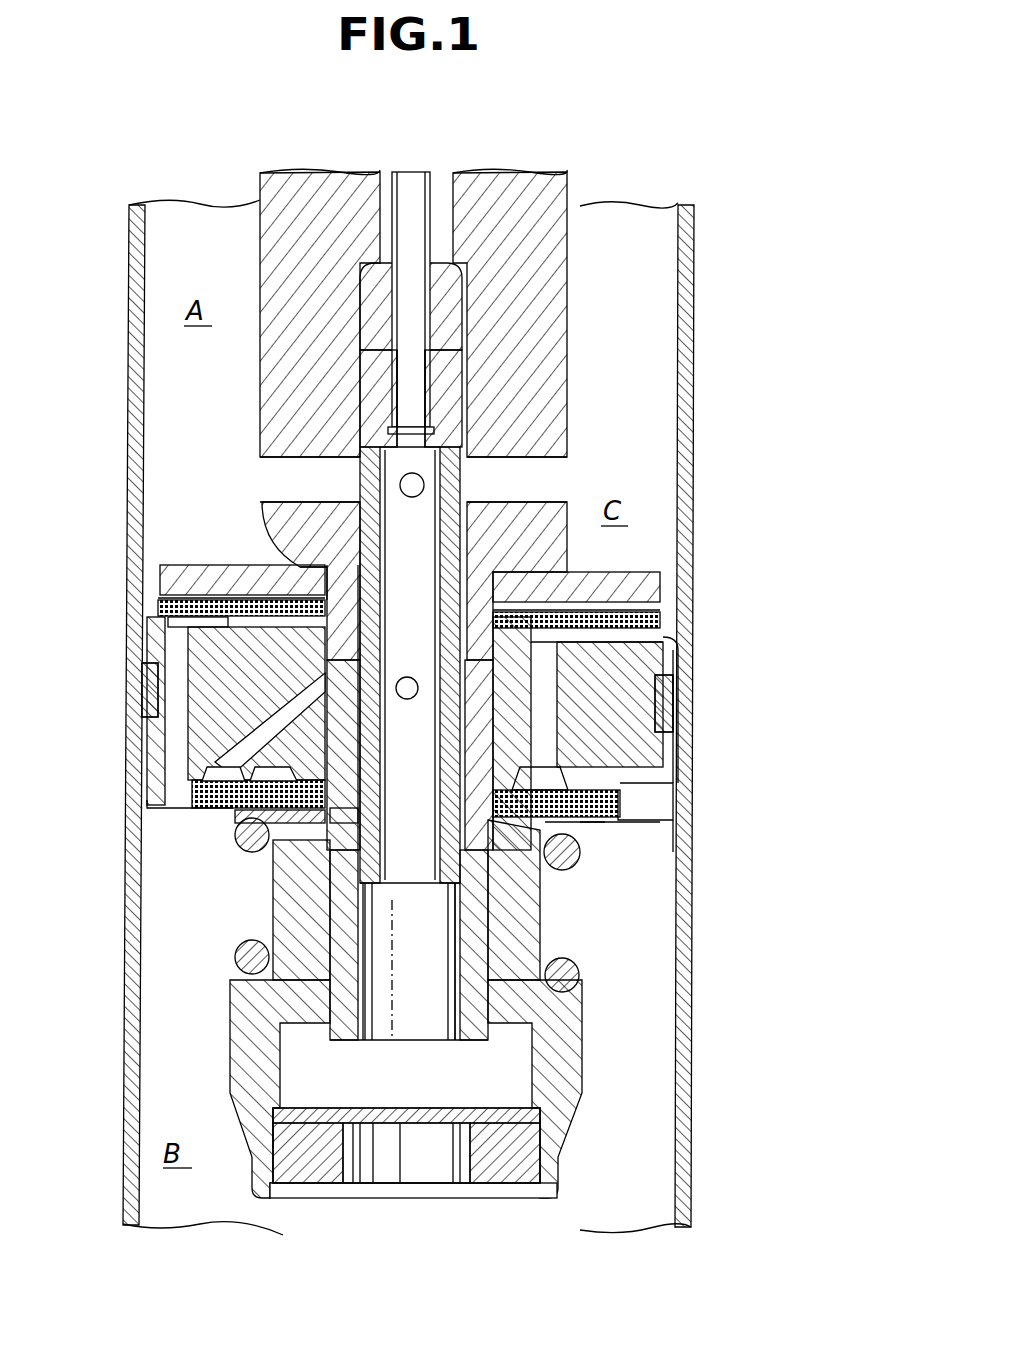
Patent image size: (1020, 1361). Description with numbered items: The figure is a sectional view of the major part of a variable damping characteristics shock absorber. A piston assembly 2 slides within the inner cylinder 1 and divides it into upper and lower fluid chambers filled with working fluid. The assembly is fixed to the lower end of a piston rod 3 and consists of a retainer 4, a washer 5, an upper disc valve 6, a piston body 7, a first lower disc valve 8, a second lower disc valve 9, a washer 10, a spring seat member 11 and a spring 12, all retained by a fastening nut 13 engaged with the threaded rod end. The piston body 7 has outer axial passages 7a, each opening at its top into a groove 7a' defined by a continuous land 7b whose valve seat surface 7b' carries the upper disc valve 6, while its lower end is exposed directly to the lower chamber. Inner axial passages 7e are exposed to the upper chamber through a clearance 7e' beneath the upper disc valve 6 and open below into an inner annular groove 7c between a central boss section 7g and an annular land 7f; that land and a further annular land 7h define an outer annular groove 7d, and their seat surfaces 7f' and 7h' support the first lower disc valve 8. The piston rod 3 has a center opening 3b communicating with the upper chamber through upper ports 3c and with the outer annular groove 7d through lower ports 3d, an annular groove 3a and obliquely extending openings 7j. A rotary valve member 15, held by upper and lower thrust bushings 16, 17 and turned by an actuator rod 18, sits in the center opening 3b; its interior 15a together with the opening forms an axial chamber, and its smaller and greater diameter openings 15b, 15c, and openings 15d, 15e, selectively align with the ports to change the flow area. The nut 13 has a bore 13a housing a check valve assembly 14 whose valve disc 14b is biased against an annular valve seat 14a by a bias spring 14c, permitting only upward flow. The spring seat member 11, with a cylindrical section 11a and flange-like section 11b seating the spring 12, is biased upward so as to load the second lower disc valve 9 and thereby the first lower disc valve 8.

The inner cylinder 1 is at (700, 318).
The piston assembly 2 is at (135, 657).
The piston rod 3 is at (575, 235).
The annular groove 3a is at (255, 576).
The center opening 3b is at (357, 968).
The upper ports 3c is at (273, 470).
The lower ports 3d is at (348, 640).
The retainer 4 is at (165, 565).
The washer 5 is at (548, 568).
The upper disc valve 6 is at (165, 600).
The piston body 7 is at (623, 715).
The outer axial passage 7a is at (195, 703).
The groove 7a' is at (115, 711).
The land 7b is at (147, 618).
The valve seat surface 7b' is at (197, 582).
The inner annular groove 7c is at (330, 775).
The outer annular groove 7d is at (215, 765).
The inner axial passage 7e is at (650, 704).
The clearance 7e' is at (629, 610).
The annular land 7f is at (627, 789).
The valve seat surface 7f' is at (180, 811).
The central boss section 7g is at (352, 812).
The annular land 7h is at (693, 804).
The valve seat surface 7h' is at (149, 805).
The obliquely extending openings 7j is at (200, 735).
The first lower disc valve 8 is at (605, 822).
The second lower disc valve 9 is at (678, 850).
The washer 10 is at (557, 903).
The spring seat member 11 is at (268, 857).
The cylindrical section 11a is at (557, 867).
The flange-like section 11b is at (583, 828).
The spring 12 is at (565, 972).
The fastening nut 13 is at (220, 1077).
The bore 13a is at (420, 1082).
The check valve assembly 14 is at (776, 1095).
The annular valve seat 14a is at (515, 1165).
The valve disc 14b is at (540, 1113).
The bias spring 14c is at (532, 1058).
The rotary valve member 15 is at (460, 378).
The bore of tube 15a is at (432, 608).
The smaller diameter openings 15b is at (470, 488).
The greater diameter openings 15c is at (430, 476).
The opening 15d is at (413, 665).
The opening 15e is at (415, 714).
The upper thrust bushing 16 is at (450, 302).
The lower thrust bushing 17 is at (448, 886).
The actuator rod 18 is at (410, 213).